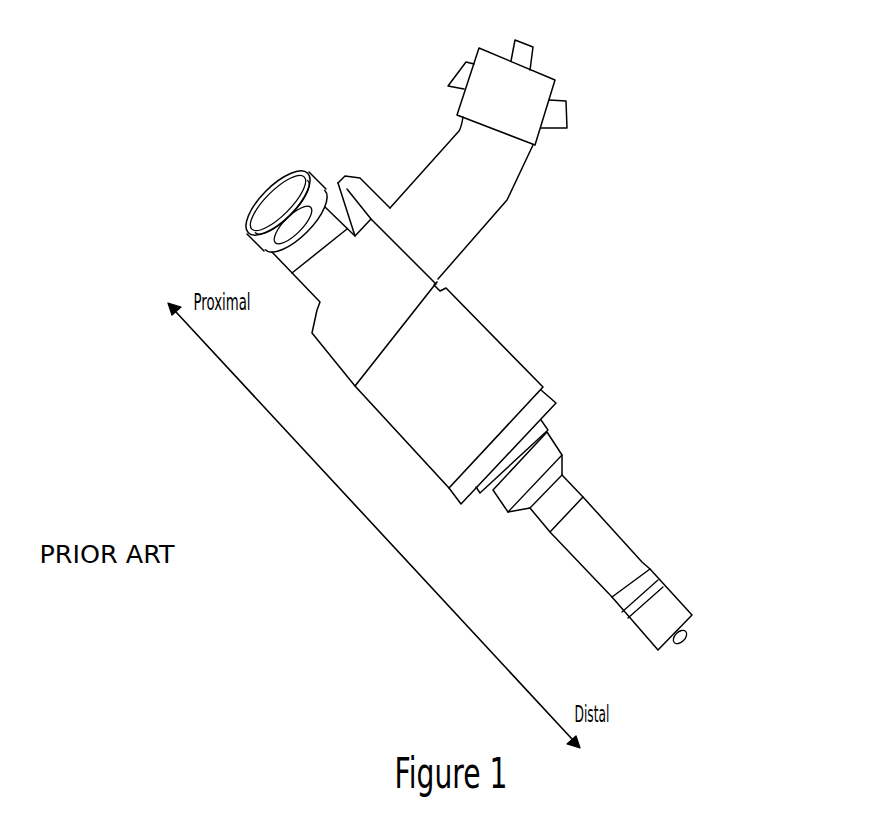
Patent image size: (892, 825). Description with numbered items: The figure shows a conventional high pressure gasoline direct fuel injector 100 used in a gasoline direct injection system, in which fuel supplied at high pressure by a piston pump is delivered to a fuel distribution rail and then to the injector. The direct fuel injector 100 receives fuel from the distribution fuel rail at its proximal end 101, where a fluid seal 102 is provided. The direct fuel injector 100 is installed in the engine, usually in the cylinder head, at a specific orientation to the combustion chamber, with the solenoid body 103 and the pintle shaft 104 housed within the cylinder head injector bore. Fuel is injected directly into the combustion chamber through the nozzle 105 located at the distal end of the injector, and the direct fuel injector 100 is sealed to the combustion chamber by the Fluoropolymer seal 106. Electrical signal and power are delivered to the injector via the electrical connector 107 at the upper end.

The direct fuel injector 100 is at (607, 296).
The proximal end 101 is at (273, 169).
The fluid seal 102 is at (248, 217).
The solenoid body 103 is at (350, 391).
The pintle shaft 104 is at (662, 540).
The nozzle 105 is at (688, 621).
The Fluoropolymer seal 106 is at (653, 565).
The electrical connector 107 is at (497, 44).